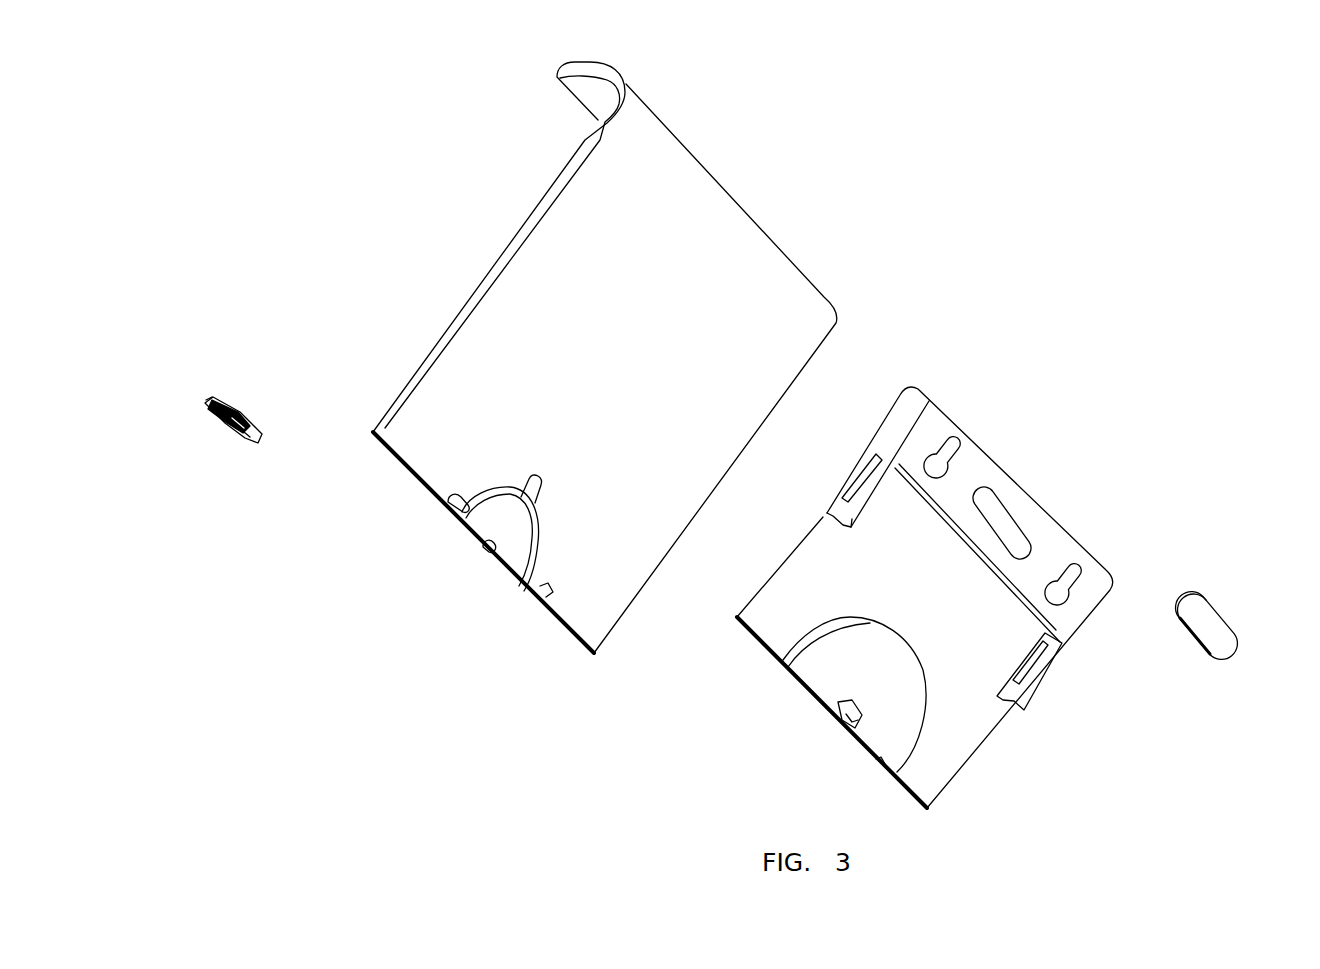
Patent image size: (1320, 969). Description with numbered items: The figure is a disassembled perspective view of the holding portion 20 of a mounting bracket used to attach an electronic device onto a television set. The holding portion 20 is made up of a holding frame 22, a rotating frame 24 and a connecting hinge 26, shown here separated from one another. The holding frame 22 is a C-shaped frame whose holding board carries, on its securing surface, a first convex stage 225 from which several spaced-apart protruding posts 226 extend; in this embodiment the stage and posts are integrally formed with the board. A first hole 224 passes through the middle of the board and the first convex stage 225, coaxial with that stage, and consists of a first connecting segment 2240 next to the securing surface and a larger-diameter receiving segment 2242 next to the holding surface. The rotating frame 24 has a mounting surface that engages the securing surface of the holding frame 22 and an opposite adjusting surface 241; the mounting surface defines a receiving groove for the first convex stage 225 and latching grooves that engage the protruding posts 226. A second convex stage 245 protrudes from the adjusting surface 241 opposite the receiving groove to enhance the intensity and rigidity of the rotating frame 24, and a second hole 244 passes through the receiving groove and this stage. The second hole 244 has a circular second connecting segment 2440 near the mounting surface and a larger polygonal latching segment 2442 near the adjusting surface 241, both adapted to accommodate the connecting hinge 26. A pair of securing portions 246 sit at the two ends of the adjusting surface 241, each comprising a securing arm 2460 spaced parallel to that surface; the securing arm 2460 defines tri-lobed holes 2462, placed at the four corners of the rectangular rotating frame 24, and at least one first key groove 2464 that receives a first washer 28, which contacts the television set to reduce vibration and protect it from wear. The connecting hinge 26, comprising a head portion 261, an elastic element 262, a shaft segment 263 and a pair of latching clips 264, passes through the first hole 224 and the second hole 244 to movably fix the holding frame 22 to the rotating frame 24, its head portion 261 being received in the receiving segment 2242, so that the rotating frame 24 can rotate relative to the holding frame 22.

The holding portion 20 is at (723, 437).
The holding frame 22 is at (552, 397).
The first hole 224 is at (382, 568).
The first connecting segment 2240 is at (487, 550).
The receiving segment 2242 is at (462, 522).
The first convex stage 225 is at (523, 533).
The protruding posts 226 is at (537, 545).
The rotating frame 24 is at (939, 568).
The adjusting surface 241 is at (803, 580).
The second hole 244 is at (758, 763).
The second connecting segment 2440 is at (837, 710).
The latching segment 2442 is at (850, 727).
The second convex stage 245 is at (832, 662).
The securing portions 246 is at (1085, 551).
The securing arm 2460 is at (1090, 603).
The tri-lobed holes 2462 is at (1064, 576).
The first key groove 2464 is at (997, 517).
The connecting hinge 26 is at (204, 418).
The head portion 261 is at (208, 403).
The elastic element 262 is at (213, 412).
The shaft segment 263 is at (230, 420).
The latching clips 264 is at (243, 433).
The first washer 28 is at (1213, 620).